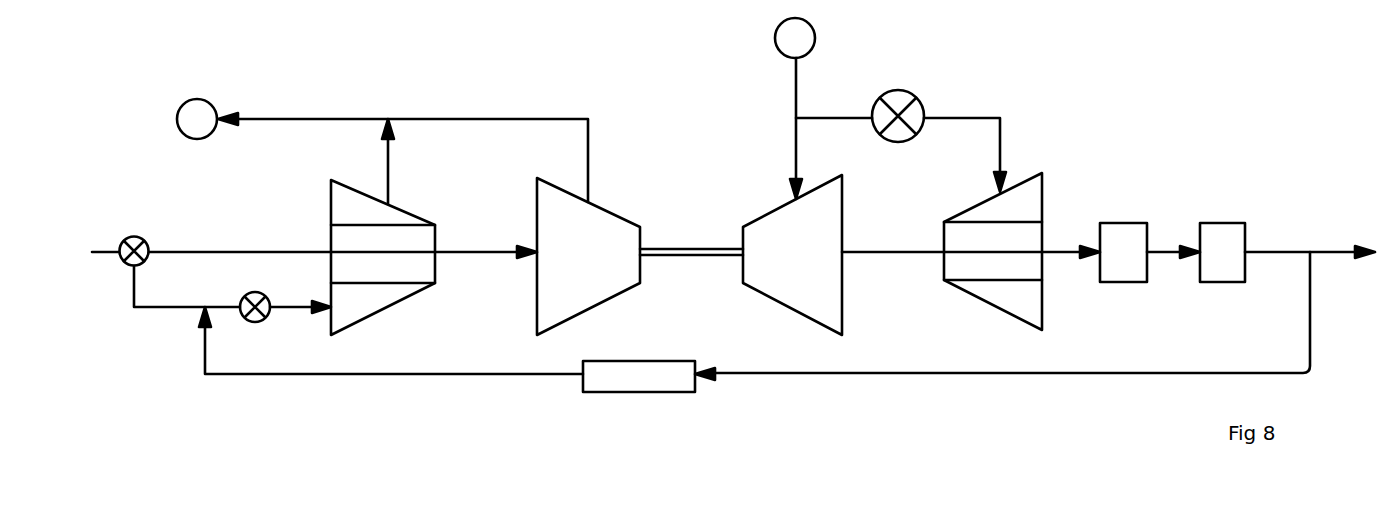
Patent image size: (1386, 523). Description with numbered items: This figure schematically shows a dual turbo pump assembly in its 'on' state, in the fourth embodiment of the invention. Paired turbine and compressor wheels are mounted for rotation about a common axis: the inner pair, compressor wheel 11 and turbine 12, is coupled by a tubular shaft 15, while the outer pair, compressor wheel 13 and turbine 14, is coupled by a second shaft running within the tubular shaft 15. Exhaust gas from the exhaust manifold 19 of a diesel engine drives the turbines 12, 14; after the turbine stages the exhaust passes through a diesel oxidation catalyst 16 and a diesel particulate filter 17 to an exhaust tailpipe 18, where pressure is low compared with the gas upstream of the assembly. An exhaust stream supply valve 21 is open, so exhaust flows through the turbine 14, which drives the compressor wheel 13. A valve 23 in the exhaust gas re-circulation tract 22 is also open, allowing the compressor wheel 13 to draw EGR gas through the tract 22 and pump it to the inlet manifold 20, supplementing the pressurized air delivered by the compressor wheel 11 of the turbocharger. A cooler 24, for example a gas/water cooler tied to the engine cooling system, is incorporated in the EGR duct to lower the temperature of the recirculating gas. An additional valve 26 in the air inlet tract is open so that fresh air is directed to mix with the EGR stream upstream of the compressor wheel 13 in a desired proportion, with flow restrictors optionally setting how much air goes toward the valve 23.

The compressor wheel 11 is at (627, 222).
The turbine 12 is at (779, 205).
The compressor wheel 13 is at (428, 222).
The turbine 14 is at (1034, 178).
The tubular shaft 15 is at (704, 247).
The diesel oxidation catalyst 16 is at (1140, 198).
The diesel particulate filter 17 is at (1236, 198).
The exhaust tailpipe 18 is at (1338, 250).
The exhaust manifold 19 is at (795, 108).
The inlet manifold 20 is at (382, 151).
The exhaust stream supply valve 21 is at (924, 104).
The exhaust gas re-circulation tract 22 is at (873, 375).
The valve 23 is at (251, 292).
The cooler 24 is at (630, 387).
The valve 26 is at (131, 237).